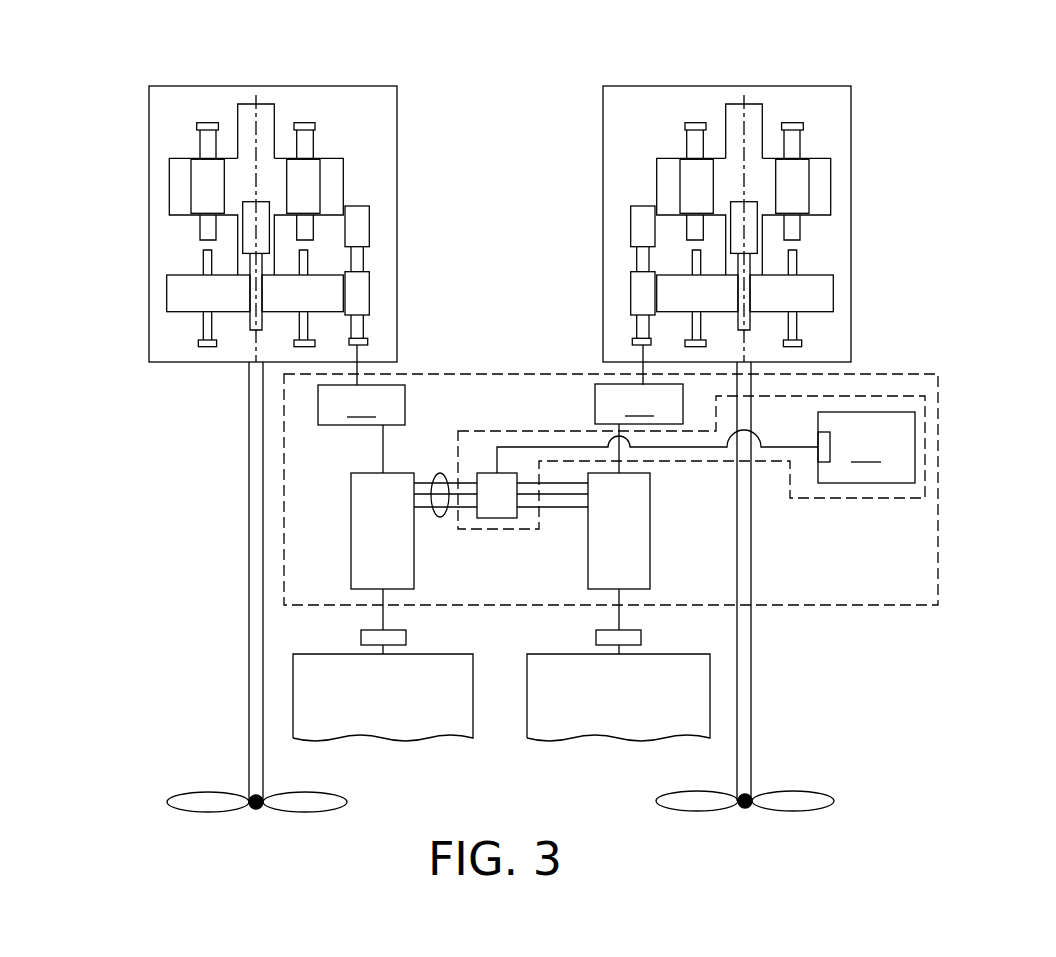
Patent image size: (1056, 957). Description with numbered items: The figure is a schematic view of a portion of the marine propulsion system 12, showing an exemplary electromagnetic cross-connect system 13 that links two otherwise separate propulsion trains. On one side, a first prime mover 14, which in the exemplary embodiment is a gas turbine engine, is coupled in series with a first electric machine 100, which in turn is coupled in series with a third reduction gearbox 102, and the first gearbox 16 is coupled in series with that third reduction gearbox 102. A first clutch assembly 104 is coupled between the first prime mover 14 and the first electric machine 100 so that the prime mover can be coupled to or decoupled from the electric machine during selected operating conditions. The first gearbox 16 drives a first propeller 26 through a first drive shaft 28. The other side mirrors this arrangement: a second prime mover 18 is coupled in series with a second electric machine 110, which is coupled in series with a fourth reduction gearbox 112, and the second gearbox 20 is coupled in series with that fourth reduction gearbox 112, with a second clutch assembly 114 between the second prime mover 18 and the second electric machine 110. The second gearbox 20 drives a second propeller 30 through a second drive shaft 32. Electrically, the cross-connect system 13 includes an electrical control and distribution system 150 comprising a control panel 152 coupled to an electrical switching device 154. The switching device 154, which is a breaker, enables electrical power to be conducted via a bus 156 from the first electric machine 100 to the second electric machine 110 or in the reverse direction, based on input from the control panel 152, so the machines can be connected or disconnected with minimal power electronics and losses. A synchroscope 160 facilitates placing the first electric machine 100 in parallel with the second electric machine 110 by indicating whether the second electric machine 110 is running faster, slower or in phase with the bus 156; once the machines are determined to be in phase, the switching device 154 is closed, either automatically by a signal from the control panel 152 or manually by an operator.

The propulsion system 12 is at (952, 95).
The electromagnetic cross-connect system 13 is at (857, 605).
The first prime mover 14 is at (350, 728).
The first gearbox 16 is at (396, 155).
The second prime mover 18 is at (582, 728).
The second gearbox 20 is at (604, 162).
The first propeller 26 is at (190, 810).
The first drive shaft 28 is at (248, 562).
The second propeller 30 is at (700, 812).
The second drive shaft 32 is at (753, 660).
The first electric machine 100 is at (351, 515).
The third reduction gearbox 102 is at (361, 429).
The first clutch assembly 104 is at (361, 637).
The second electric machine 110 is at (588, 560).
The fourth reduction gearbox 112 is at (639, 428).
The second clutch assembly 114 is at (642, 637).
The electrical control and distribution system 150 is at (907, 395).
The control panel 152 is at (866, 447).
The electrical switching device 154 is at (498, 519).
The bus 156 is at (438, 474).
The synchroscope 160 is at (818, 438).